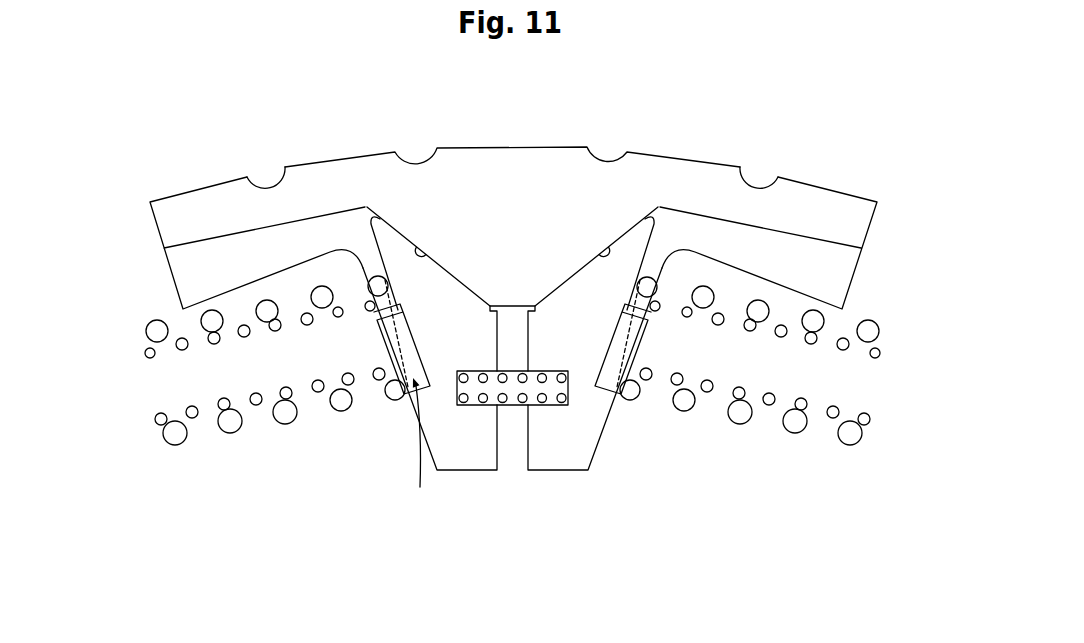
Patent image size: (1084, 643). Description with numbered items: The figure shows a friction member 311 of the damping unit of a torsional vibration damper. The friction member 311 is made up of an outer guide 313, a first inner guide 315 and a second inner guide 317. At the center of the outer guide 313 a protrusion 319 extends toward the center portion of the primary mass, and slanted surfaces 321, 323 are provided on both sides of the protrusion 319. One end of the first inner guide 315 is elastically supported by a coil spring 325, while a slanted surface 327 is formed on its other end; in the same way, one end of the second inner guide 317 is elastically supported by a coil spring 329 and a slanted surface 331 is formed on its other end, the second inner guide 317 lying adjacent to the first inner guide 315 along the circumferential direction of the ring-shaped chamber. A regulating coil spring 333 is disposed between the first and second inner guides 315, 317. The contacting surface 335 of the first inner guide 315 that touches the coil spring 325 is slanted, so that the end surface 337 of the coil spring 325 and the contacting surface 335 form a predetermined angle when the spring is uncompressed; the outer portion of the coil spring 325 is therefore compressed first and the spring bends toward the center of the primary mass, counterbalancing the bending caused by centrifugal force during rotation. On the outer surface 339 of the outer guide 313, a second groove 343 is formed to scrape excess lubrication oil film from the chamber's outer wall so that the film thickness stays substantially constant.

The friction member 311 is at (770, 121).
The outer guide 313 is at (550, 151).
The first inner guide 315 is at (468, 472).
The second inner guide 317 is at (563, 472).
The protrusion 319 is at (530, 262).
The slanted surface 321 is at (400, 227).
The slanted surface 323 is at (641, 219).
The coil spring 325 is at (342, 412).
The slanted surface 327 is at (427, 253).
The coil spring 329 is at (683, 412).
The slanted surface 331 is at (600, 252).
The regulating coil spring 333 is at (503, 406).
The contacting surface 335 is at (427, 361).
The end surface 337 is at (388, 376).
The outer surface 339 is at (850, 198).
The second groove 343 is at (268, 172).